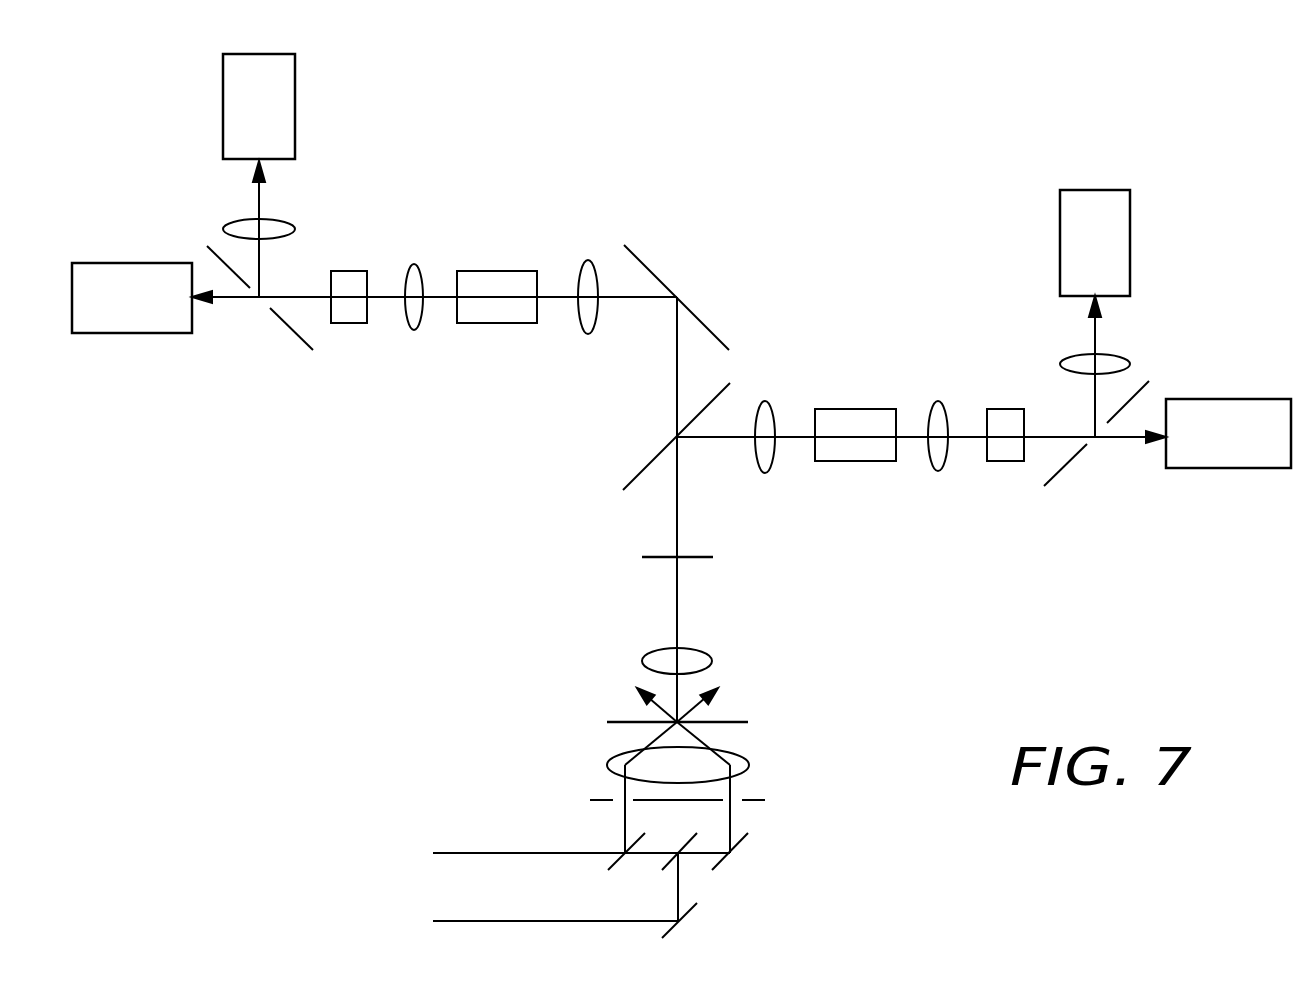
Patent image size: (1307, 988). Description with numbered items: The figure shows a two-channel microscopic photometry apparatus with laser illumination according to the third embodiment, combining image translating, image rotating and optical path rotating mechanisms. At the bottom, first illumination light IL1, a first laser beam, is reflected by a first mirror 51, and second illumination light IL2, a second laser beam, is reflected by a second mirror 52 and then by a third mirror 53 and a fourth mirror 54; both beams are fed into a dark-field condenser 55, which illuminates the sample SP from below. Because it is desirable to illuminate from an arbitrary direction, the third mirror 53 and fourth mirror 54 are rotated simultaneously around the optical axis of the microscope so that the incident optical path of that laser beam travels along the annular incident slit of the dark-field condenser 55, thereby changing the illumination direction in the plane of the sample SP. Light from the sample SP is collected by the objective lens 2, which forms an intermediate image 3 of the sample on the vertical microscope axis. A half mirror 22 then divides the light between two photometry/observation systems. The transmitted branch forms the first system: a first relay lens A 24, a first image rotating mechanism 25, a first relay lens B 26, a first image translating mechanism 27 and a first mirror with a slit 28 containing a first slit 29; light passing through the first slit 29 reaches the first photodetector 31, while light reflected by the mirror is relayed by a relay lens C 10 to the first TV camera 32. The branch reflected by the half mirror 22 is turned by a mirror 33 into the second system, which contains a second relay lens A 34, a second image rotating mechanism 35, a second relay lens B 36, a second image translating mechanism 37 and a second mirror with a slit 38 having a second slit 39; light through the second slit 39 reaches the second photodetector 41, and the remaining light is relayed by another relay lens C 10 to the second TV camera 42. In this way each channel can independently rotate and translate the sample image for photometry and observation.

The objective lens 2 is at (702, 647).
The intermediate image of the sample 3 is at (700, 553).
The relay lens C 10 is at (285, 222).
The half mirror 22 is at (648, 462).
The first relay lens A 24 is at (775, 400).
The first image rotating mechanism 25 is at (848, 461).
The first relay lens B 26 is at (940, 470).
The first image translating mechanism 27 is at (1007, 405).
The first mirror with a slit 28 is at (1070, 473).
The first slit 29 is at (1092, 443).
The first photodetector 31 is at (1230, 468).
The first TV camera 32 is at (1102, 190).
The mirror 33 is at (680, 297).
The second relay lens A 34 is at (587, 337).
The second image rotating mechanism 35 is at (494, 271).
The second relay lens B 36 is at (412, 265).
The second image translating mechanism 37 is at (343, 323).
The second mirror with a slit 38 is at (303, 345).
The second slit 39 is at (263, 303).
The second photodetector 41 is at (148, 333).
The second TV camera 42 is at (295, 120).
The first mirror 51 is at (627, 853).
The second mirror 52 is at (680, 920).
The third mirror 53 is at (693, 838).
The fourth mirror 54 is at (732, 855).
The dark-field condenser 55 is at (742, 753).
The sample SP is at (613, 718).
The first illumination light IL1 is at (531, 836).
The second illumination light IL2 is at (505, 887).